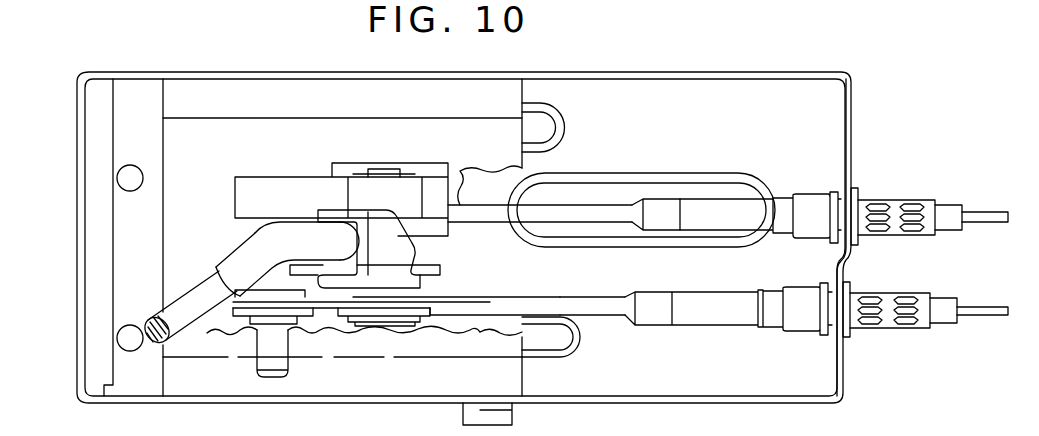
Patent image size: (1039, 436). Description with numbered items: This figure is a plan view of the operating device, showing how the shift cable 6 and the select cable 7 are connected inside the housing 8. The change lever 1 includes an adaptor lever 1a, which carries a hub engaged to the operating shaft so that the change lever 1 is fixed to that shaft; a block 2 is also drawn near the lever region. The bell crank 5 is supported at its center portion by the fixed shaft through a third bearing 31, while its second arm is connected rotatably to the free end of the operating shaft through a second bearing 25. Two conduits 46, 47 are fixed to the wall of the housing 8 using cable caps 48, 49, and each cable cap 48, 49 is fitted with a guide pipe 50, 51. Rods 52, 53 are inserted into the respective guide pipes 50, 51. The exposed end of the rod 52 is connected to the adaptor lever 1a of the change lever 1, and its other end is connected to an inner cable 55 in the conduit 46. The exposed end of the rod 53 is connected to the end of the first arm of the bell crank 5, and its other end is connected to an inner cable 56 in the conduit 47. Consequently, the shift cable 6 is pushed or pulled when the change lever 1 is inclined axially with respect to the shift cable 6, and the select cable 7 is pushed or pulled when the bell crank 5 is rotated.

The housing 8 is at (330, 93).
The circuit block 2 is at (297, 175).
The change lever 1 is at (208, 290).
The adaptor lever 1a is at (410, 257).
The bell crank 5 is at (327, 305).
The second bearing 25 is at (384, 330).
The third bearing 31 is at (265, 330).
The rod 52 is at (568, 205).
The shift cable 6 is at (607, 203).
The guide pipe 50 is at (713, 207).
The cable cap 48 is at (884, 205).
The conduit 46 is at (946, 212).
The inner cable 55 is at (985, 215).
The rod 53 is at (530, 310).
The select cable 7 is at (597, 318).
The guide pipe 51 is at (707, 318).
The cable cap 49 is at (886, 328).
The conduit 47 is at (943, 323).
The inner cable 56 is at (985, 315).